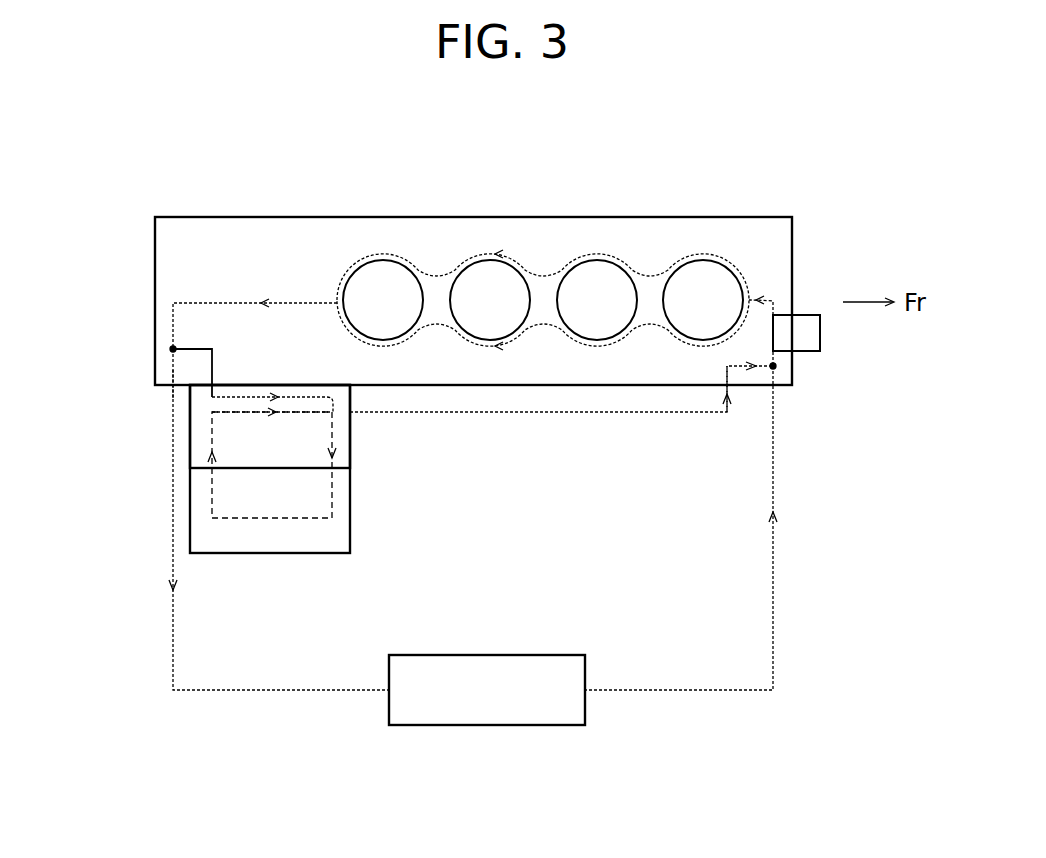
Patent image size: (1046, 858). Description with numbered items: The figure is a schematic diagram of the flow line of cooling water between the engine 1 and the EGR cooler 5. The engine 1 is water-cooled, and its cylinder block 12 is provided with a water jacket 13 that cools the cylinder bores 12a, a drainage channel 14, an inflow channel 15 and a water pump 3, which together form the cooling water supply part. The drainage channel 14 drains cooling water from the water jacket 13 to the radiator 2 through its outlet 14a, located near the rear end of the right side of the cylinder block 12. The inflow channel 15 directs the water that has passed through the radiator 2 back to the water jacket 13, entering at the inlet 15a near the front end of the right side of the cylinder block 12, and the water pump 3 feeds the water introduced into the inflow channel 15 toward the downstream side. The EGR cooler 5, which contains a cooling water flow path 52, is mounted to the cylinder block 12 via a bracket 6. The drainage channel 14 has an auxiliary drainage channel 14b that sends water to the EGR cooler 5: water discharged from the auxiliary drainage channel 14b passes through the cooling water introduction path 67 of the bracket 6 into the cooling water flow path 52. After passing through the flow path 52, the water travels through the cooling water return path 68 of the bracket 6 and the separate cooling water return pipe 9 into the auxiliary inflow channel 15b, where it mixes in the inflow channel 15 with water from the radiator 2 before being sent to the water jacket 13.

The engine 1 is at (796, 216).
The radiator 2 is at (516, 655).
The water pump 3 is at (825, 333).
The EGR cooler 5 is at (350, 555).
The bracket 6 is at (352, 450).
The cooling water return pipe 9 is at (512, 414).
The cylinder block 12 is at (269, 232).
The cylinder bores 12a is at (465, 268).
The water jacket 13 is at (545, 274).
The drainage channel 14 is at (173, 325).
The outlet 14a is at (173, 386).
The auxiliary drainage channel 14b is at (212, 372).
The inflow channel 15 is at (797, 357).
The inlet 15a is at (778, 388).
The auxiliary inflow channel 15b is at (727, 376).
The cooling water flow path 52 is at (278, 520).
The cooling water introduction path 67 is at (298, 396).
The cooling water return path 68 is at (240, 413).